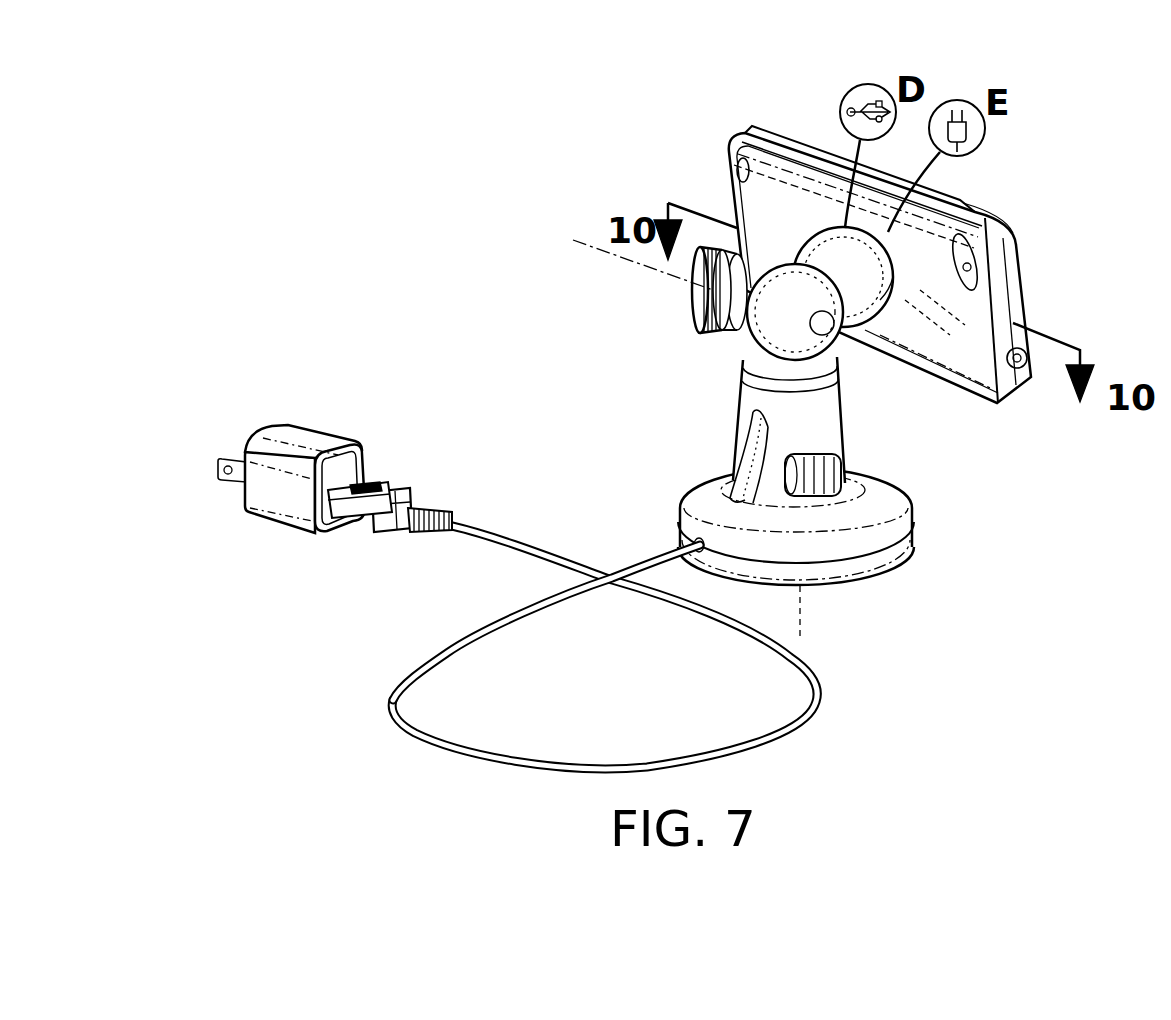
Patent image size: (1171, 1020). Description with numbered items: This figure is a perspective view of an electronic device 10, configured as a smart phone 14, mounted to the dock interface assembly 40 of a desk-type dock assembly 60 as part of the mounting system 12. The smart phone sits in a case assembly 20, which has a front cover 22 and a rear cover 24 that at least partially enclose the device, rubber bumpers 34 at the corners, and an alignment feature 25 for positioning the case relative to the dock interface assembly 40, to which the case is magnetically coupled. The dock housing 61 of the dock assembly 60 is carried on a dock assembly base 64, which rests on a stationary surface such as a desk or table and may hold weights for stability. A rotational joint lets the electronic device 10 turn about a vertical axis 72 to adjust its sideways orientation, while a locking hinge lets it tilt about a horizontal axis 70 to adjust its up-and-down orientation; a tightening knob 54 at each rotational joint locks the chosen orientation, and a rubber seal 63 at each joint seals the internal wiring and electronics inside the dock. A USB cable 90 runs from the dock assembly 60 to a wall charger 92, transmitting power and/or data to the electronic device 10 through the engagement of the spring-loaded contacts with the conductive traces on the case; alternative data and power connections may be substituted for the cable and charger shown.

The electronic device 10 is at (972, 280).
The mounting system 12 is at (823, 228).
The smart phone 14 is at (962, 260).
The case assembly 20 is at (1020, 297).
The front cover 22 is at (780, 140).
The rear cover 24 is at (732, 157).
The alignment feature 25 is at (900, 290).
The bumper 34 is at (993, 223).
The dock interface assembly 40 is at (835, 237).
The tightening knob 54 is at (690, 287).
The dock assembly 60 is at (883, 567).
The dock housing 61 is at (873, 297).
The rubber seal 63 is at (747, 368).
The dock assembly base 64 is at (713, 477).
The horizontal axis 70 is at (583, 240).
The vertical axis 72 is at (800, 627).
The USB cable 90 is at (813, 717).
The wall charger 92 is at (320, 433).